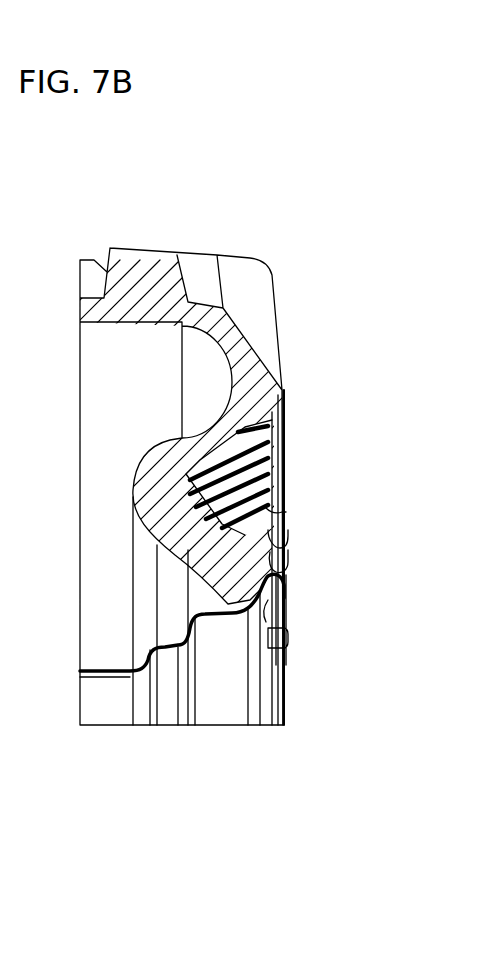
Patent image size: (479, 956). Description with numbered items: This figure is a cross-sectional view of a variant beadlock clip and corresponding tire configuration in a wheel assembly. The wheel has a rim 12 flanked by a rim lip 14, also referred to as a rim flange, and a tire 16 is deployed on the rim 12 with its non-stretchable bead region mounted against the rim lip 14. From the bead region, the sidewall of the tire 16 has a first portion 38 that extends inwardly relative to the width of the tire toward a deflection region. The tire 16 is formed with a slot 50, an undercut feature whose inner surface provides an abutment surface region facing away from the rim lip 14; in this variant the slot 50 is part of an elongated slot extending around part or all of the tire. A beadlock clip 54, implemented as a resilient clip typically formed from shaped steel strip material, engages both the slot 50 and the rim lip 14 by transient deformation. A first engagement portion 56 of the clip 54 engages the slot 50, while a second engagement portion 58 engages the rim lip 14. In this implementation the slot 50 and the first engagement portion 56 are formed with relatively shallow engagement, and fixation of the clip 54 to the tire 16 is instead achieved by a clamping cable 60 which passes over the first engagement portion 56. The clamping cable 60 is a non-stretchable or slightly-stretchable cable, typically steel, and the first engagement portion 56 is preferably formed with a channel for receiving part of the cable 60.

The rim 12 is at (118, 695).
The rim lip 14 is at (268, 680).
The tire 16 is at (117, 238).
The first portion 38 is at (200, 525).
The slot 50 is at (283, 540).
The beadlock clip 54 is at (283, 567).
The first engagement portion 56 is at (283, 510).
The second engagement portion 58 is at (283, 590).
The clamping cable 60 is at (205, 520).